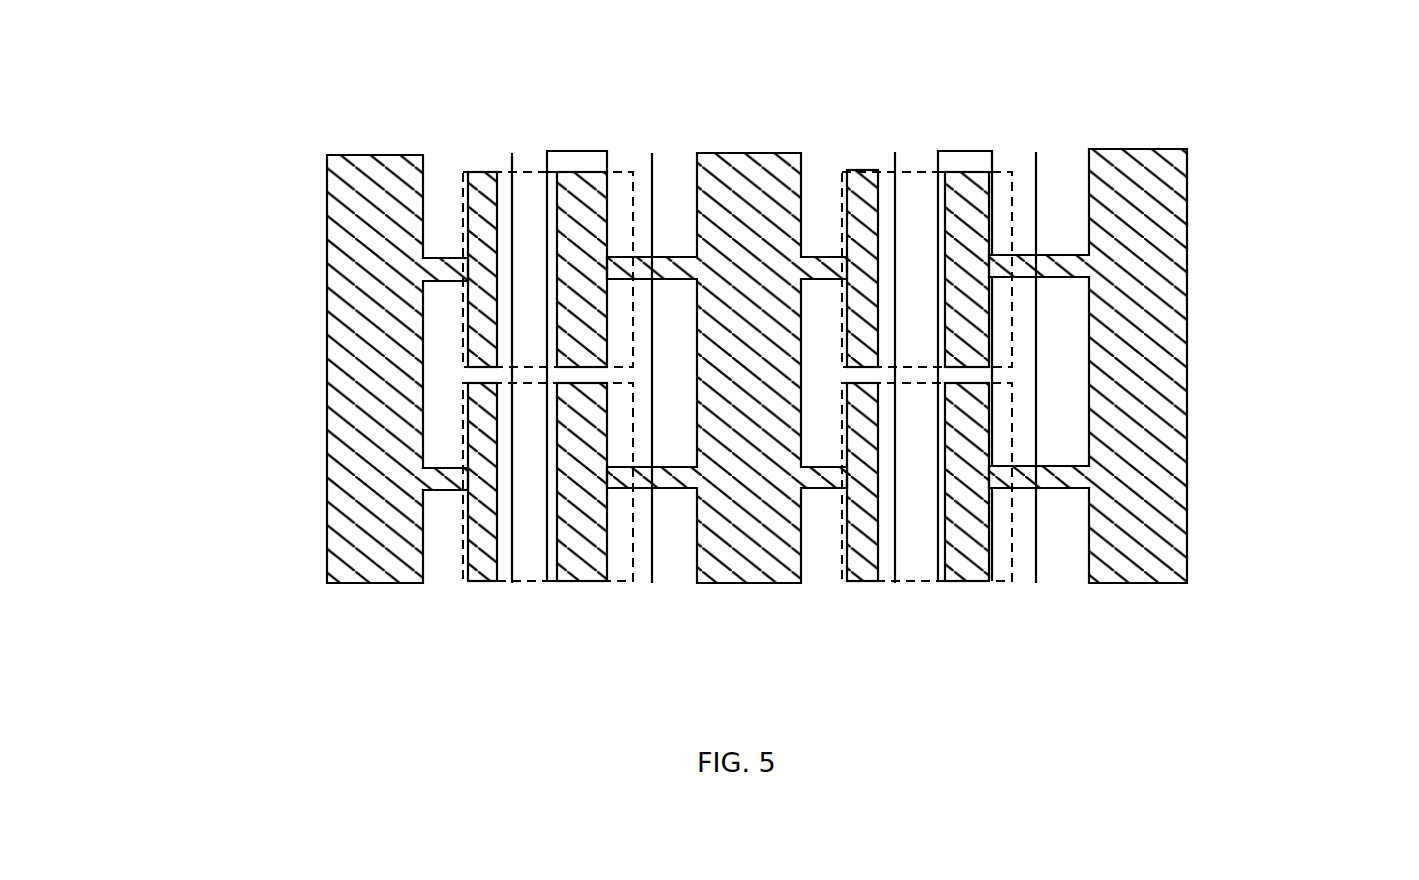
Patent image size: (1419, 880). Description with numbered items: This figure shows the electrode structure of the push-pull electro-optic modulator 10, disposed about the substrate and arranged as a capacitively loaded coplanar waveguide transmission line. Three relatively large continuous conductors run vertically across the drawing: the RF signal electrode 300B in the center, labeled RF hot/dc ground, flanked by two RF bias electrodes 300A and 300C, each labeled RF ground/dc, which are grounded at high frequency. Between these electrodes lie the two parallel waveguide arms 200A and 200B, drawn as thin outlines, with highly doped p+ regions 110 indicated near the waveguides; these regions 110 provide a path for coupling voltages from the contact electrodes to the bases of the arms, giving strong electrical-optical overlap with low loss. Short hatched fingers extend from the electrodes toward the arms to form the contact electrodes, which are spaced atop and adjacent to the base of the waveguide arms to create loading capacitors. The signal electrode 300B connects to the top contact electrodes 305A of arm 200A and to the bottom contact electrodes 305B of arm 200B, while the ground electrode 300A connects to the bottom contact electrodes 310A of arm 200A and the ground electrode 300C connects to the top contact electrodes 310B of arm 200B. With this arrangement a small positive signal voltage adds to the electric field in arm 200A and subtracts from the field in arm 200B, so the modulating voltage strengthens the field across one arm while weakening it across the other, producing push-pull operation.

The modulator 10 is at (1264, 98).
The doped semiconductor regions 110 is at (523, 190).
The waveguide arm 200A is at (563, 152).
The waveguide arm 200B is at (985, 150).
The RF bias electrode 300A is at (350, 375).
The RF signal electrode 300B is at (780, 152).
The RF bias electrode 300C is at (1160, 351).
The top contact electrodes 305A is at (582, 573).
The bottom contact electrodes 305B is at (867, 572).
The bottom contact electrodes 310A is at (485, 573).
The top contact electrodes 310B is at (970, 577).